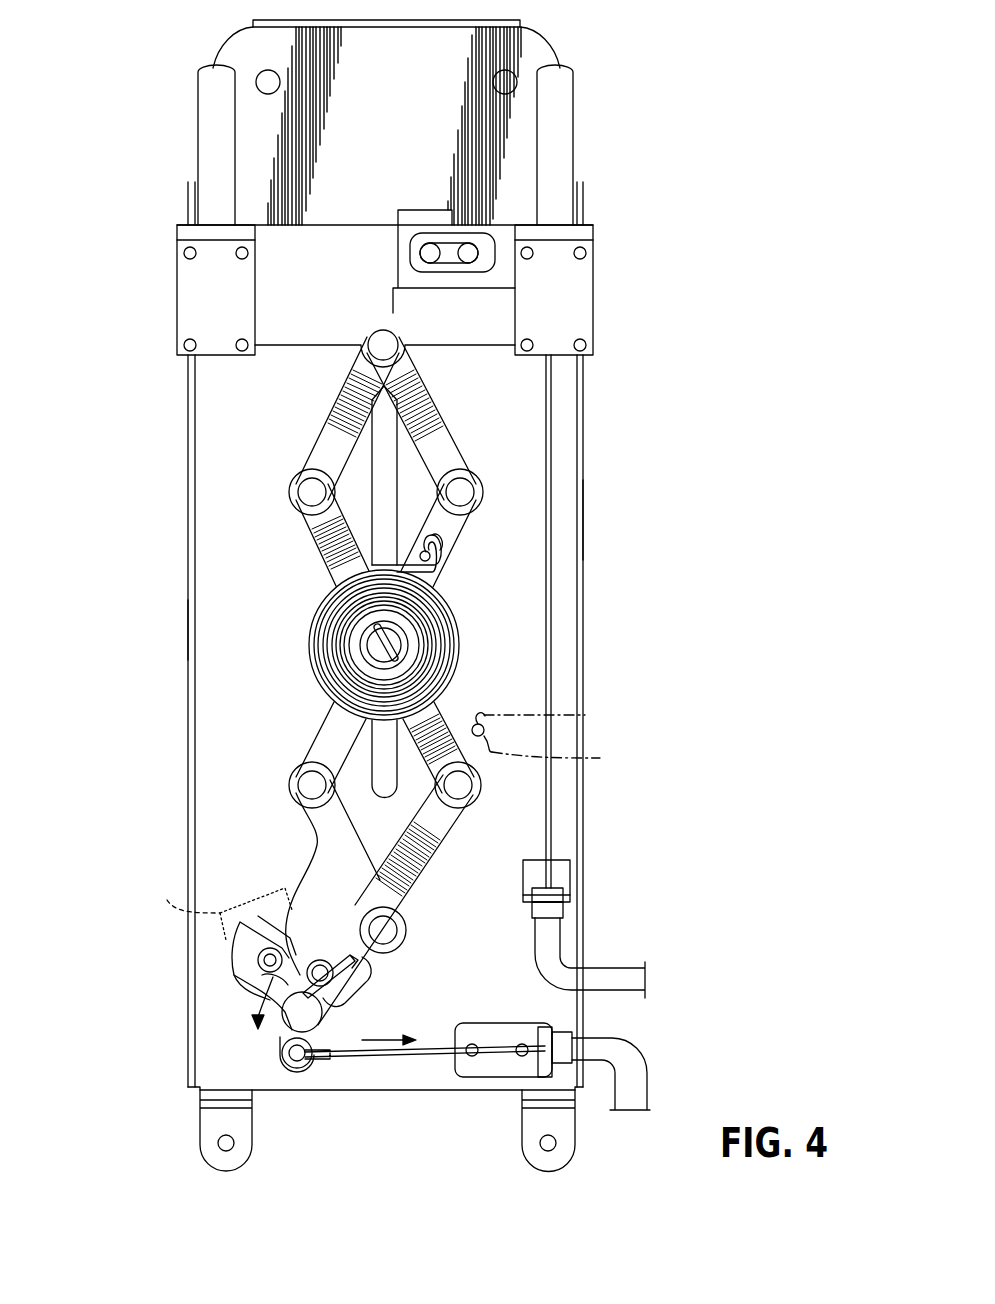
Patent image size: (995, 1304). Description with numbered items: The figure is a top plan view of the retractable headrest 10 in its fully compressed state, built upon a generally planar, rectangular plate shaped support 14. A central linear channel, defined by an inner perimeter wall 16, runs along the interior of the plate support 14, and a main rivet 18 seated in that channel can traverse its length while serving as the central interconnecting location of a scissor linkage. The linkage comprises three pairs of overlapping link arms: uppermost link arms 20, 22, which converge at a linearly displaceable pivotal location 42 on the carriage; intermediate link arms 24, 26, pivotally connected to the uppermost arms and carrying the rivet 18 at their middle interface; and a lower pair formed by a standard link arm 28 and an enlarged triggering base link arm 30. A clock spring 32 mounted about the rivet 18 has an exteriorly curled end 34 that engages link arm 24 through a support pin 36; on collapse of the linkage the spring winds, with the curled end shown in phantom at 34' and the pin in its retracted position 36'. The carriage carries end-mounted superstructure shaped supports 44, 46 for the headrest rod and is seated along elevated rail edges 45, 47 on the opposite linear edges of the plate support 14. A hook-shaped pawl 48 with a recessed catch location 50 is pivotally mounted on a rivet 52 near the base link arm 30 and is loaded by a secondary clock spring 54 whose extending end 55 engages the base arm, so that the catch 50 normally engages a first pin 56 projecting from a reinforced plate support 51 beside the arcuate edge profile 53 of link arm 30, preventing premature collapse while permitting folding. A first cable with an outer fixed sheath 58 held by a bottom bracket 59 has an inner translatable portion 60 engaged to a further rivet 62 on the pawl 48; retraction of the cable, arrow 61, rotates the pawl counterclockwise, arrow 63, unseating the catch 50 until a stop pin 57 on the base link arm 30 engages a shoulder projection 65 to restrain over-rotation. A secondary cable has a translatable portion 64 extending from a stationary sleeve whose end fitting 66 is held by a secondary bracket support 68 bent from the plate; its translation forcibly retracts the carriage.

The retractable headrest 10 is at (67, 949).
The plate shaped support 14 is at (232, 635).
The inner perimeter wall of channel 16 is at (385, 800).
The main rivet 18 is at (365, 645).
The upper-most link arm 20 is at (440, 415).
The upper-most link arm 22 is at (325, 432).
The intermediate link arm 24 is at (458, 535).
The intermediate link arm 26 is at (318, 528).
The standard link arm 28 is at (440, 890).
The base link arm 30 is at (315, 840).
The clock spring 32 is at (435, 640).
The curled end of clock spring 34 is at (482, 500).
The displaced curled end position 34' is at (562, 772).
The support pin 36 is at (419, 519).
The retracted support pin position 36' is at (549, 714).
The upper displaceable pivotal location 42 is at (380, 340).
The superstructure shaped support 44 is at (183, 313).
The elevated rail edge 45 is at (188, 628).
The superstructure shaped support 46 is at (585, 310).
The elevated rail edge 47 is at (585, 536).
The pawl 48 is at (235, 985).
The catch location 50 is at (275, 965).
The plate support 51 is at (187, 896).
The mounting rivet 52 is at (270, 1030).
The arcuate edge profile 53 is at (300, 880).
The secondary clock spring 54 is at (340, 1000).
The extending end of secondary spring 55 is at (370, 965).
The first pin 56 is at (265, 950).
The stop pin 57 is at (321, 960).
The outer fixed sheath 58 is at (628, 1050).
The bottom located bracket 59 is at (535, 1078).
The inner translatable cable portion 60 is at (423, 1058).
The cable retraction arrow 61 is at (383, 1055).
The further rivet 62 is at (300, 1062).
The pawl rotation arrow 63 is at (260, 992).
The translatable cable portion 64 is at (551, 610).
The shoulder projection 65 is at (335, 1010).
The bracket supporting end fitting 66 is at (555, 885).
The secondary bracket support 68 is at (572, 905).